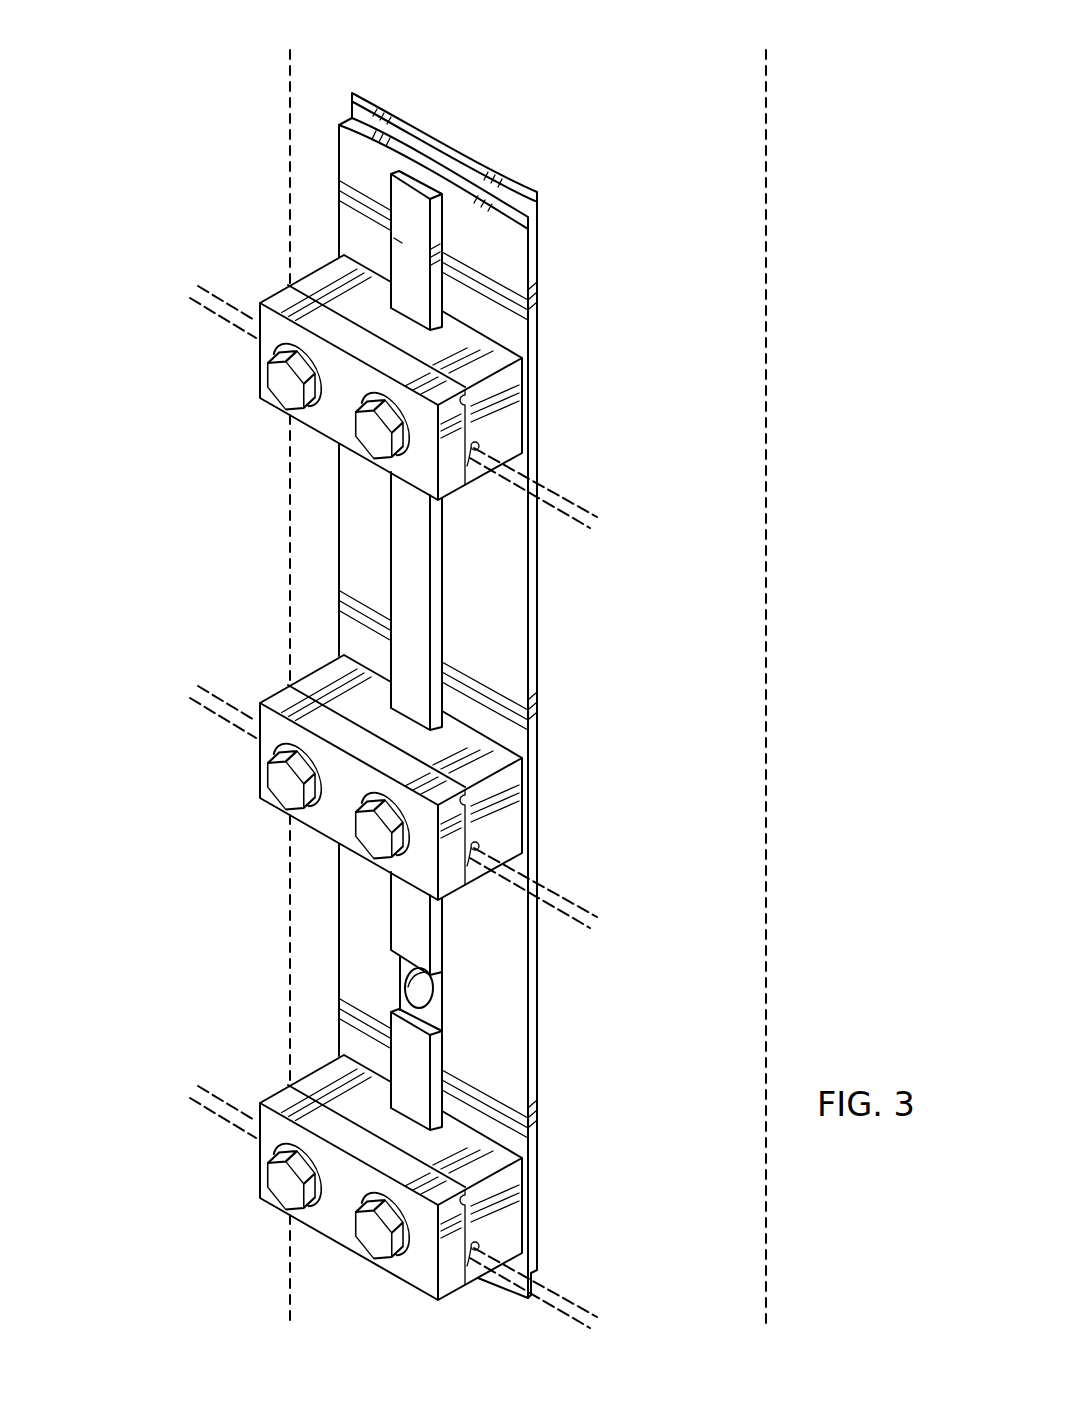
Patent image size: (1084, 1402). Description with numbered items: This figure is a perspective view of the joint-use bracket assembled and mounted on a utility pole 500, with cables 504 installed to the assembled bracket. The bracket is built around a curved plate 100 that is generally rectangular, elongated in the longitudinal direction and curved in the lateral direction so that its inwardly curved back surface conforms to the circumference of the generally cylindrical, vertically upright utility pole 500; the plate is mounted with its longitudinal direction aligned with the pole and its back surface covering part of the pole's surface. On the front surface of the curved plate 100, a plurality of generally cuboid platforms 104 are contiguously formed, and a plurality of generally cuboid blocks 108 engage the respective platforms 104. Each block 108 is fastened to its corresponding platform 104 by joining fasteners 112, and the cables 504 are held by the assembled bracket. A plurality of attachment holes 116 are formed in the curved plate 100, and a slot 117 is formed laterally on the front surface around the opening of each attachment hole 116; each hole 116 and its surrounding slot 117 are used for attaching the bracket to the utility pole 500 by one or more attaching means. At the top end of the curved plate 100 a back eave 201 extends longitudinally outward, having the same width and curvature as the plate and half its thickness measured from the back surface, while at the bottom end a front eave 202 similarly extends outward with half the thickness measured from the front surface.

The curved plate 100 is at (356, 505).
The platform 104 is at (306, 318).
The block 108 is at (285, 297).
The joining fastener 112 is at (280, 780).
The attachment hole 116 is at (403, 983).
The slot 117 is at (433, 1015).
The back eave 201 is at (448, 173).
The front eave 202 is at (497, 1278).
The utility pole 500 is at (737, 123).
The cables 504 is at (557, 493).